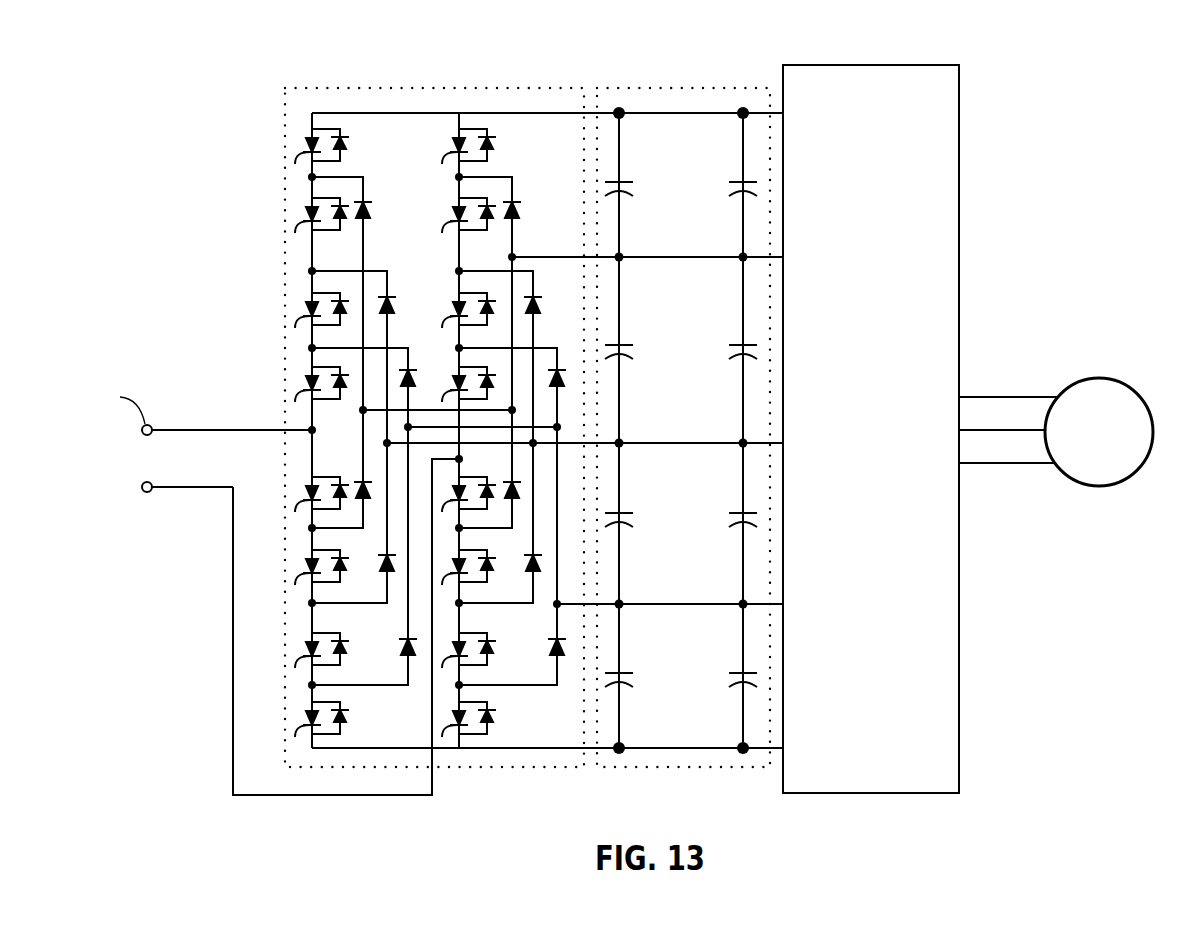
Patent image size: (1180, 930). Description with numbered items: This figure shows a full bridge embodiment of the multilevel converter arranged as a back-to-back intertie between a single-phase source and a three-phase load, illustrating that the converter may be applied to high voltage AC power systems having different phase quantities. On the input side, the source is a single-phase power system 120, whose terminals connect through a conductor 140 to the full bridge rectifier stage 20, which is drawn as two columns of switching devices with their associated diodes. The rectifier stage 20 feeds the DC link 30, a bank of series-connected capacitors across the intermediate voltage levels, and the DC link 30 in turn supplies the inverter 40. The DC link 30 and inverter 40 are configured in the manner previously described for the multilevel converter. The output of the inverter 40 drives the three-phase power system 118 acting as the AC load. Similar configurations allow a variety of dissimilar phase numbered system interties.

The multilevel rectifier / converter stage 20 is at (381, 88).
The DC link 30 is at (690, 88).
The inverter 40 is at (867, 65).
The three-phase power system 118 is at (1097, 378).
The single-phase power system 120 is at (146, 457).
The AC input conductor 140 is at (233, 568).